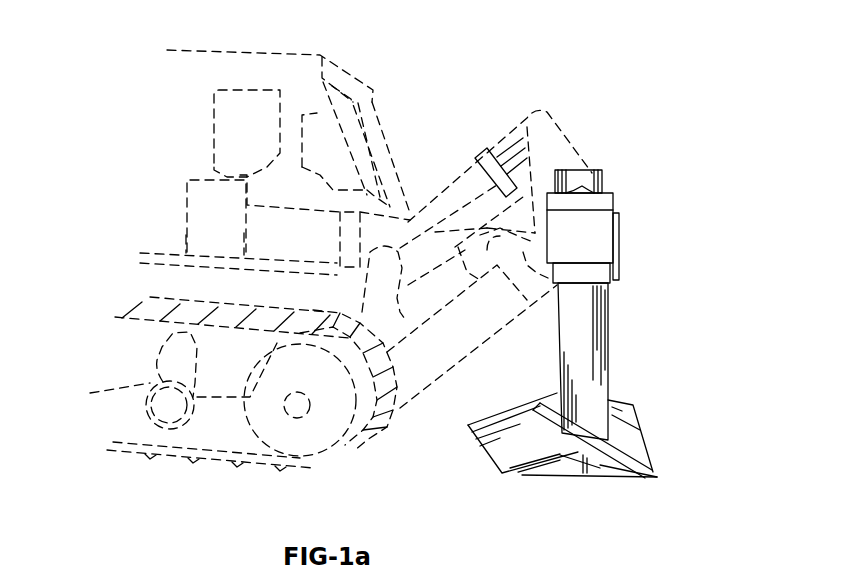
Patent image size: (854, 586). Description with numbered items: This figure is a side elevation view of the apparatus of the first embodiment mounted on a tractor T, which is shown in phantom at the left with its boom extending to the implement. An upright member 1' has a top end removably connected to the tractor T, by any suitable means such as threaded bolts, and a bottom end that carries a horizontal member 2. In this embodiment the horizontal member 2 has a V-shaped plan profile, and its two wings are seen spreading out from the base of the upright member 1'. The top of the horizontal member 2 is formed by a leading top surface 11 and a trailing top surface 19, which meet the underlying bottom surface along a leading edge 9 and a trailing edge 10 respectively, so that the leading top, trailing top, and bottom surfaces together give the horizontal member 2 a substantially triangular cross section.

The tractor T is at (384, 70).
The upright member 1' is at (624, 305).
The horizontal member 2 is at (600, 468).
The leading edge 9 is at (522, 475).
The trailing edge 10 is at (657, 477).
The leading top surface 11 is at (500, 448).
The trailing top surface 19 is at (620, 438).